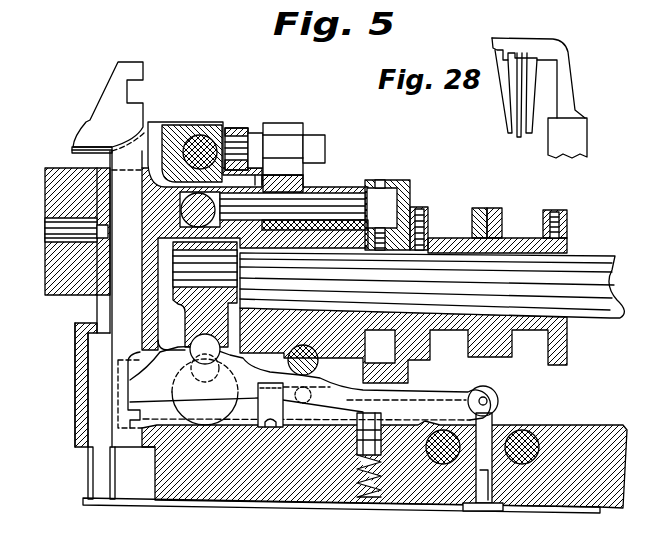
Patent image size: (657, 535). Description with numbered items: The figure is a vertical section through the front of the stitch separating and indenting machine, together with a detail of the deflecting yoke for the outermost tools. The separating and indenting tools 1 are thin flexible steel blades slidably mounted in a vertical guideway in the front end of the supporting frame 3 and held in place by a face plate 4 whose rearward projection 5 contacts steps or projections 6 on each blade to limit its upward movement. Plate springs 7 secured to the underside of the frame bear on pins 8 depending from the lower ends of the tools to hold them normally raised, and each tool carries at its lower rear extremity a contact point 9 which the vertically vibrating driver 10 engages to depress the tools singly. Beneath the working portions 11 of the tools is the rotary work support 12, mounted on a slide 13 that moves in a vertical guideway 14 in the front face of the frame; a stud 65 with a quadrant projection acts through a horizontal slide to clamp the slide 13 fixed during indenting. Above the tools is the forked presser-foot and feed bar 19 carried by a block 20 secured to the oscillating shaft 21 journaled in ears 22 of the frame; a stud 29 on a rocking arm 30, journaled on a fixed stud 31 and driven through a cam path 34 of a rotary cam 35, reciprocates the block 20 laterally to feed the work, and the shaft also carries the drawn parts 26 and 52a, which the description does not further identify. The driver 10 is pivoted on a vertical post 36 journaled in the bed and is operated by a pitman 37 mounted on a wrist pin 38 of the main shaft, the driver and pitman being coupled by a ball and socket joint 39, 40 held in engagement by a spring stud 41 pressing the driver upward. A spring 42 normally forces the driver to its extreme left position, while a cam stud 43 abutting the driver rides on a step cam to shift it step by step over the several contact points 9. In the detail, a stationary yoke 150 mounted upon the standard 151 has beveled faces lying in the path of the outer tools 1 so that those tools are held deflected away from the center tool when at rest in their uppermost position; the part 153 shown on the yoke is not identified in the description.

In FIG. 5, the separating and indenting tools 1 is at (105, 93).
In FIG. 28, the separating and indenting tools 1 is at (495, 65).
In FIG. 5, the supporting frame 3 is at (195, 488).
In FIG. 5, the face plate 4 is at (75, 397).
In FIG. 5, the rearward projection 5 is at (75, 325).
In FIG. 5, the steps or projections 6 is at (75, 359).
In FIG. 5, the plate springs 7 is at (83, 500).
In FIG. 5, the pins 8 is at (88, 470).
In FIG. 5, the contact points 9 is at (140, 400).
In FIG. 5, the driver 10 is at (332, 388).
In FIG. 5, the working portions 11 is at (72, 151).
In FIG. 5, the rotary work support 12 is at (45, 202).
In FIG. 5, the slide 13 is at (110, 199).
In FIG. 5, the vertical guideway 14 is at (100, 312).
In FIG. 5, the forked presser-foot and feed bar 19 is at (146, 129).
In FIG. 5, the block 20 is at (192, 130).
In FIG. 5, the oscillating shaft 21 is at (238, 126).
In FIG. 5, the ears 22 is at (584, 263).
In FIG. 28, the ears 22 is at (573, 134).
In FIG. 5, the gear tooth 26 is at (480, 208).
In FIG. 5, the stud 29 is at (272, 123).
In FIG. 5, the rocking arm 30 is at (303, 190).
In FIG. 5, the fixed stud 31 is at (345, 200).
In FIG. 5, the cam path 34 is at (388, 198).
In FIG. 5, the rotary cam 35 is at (414, 205).
In FIG. 5, the vertical post 36 is at (484, 485).
In FIG. 5, the pitman 37 is at (187, 312).
In FIG. 5, the wrist pin 38 is at (238, 271).
In FIG. 5, the ball and socket joint 39 is at (190, 364).
In FIG. 5, the ball and socket joint 40 is at (240, 352).
In FIG. 5, the spring stud 41 is at (385, 458).
In FIG. 5, the spring 42 is at (258, 410).
In FIG. 5, the cam stud 43 is at (311, 397).
In FIG. 5, the set screw 52a is at (560, 210).
In FIG. 5, the stud 65 is at (127, 298).
In FIG. 28, the stationary yoke 150 is at (528, 42).
In FIG. 28, the standard 151 is at (505, 50).
In FIG. 28, the shoulder 153 is at (560, 62).